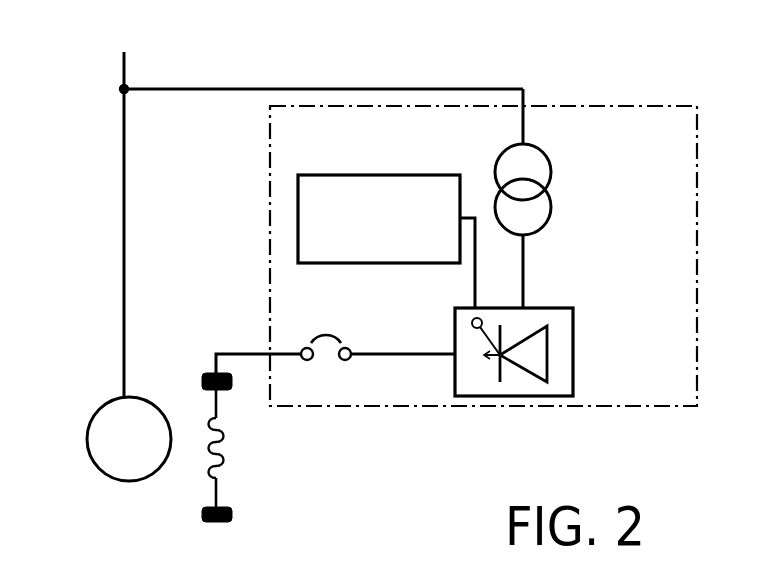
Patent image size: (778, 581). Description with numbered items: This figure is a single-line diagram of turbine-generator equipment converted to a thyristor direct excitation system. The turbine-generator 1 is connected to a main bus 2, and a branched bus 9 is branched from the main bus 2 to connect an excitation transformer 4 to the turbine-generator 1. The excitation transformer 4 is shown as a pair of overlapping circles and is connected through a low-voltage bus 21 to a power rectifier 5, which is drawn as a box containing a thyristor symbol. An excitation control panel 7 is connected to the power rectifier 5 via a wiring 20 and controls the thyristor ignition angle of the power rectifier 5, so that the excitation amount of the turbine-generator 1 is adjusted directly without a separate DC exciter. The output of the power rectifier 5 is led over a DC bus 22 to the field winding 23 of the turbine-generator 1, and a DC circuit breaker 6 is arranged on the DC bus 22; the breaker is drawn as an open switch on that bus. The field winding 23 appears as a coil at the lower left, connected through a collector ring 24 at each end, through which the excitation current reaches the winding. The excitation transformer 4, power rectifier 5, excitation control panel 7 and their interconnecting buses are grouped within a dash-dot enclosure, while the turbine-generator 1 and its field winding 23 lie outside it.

The turbine-generator 1 is at (88, 433).
The main bus 2 is at (124, 166).
The excitation transformer 4 is at (548, 158).
The power rectifier 5 is at (573, 345).
The DC circuit breaker 6 is at (325, 331).
The excitation control panel 7 is at (368, 175).
The branched bus 9 is at (222, 89).
The wiring 20 is at (475, 284).
The low-voltage bus 21 is at (527, 265).
The DC bus 22 is at (237, 352).
The field winding 23 is at (222, 458).
The collector ring 24 is at (202, 379).